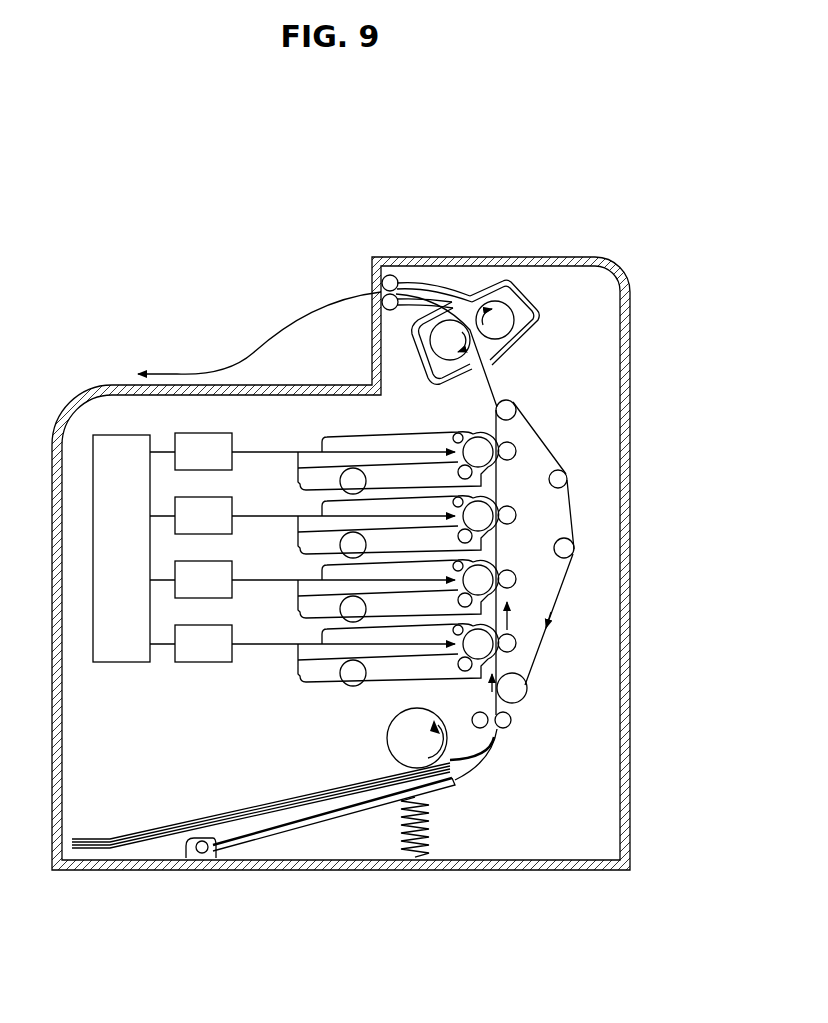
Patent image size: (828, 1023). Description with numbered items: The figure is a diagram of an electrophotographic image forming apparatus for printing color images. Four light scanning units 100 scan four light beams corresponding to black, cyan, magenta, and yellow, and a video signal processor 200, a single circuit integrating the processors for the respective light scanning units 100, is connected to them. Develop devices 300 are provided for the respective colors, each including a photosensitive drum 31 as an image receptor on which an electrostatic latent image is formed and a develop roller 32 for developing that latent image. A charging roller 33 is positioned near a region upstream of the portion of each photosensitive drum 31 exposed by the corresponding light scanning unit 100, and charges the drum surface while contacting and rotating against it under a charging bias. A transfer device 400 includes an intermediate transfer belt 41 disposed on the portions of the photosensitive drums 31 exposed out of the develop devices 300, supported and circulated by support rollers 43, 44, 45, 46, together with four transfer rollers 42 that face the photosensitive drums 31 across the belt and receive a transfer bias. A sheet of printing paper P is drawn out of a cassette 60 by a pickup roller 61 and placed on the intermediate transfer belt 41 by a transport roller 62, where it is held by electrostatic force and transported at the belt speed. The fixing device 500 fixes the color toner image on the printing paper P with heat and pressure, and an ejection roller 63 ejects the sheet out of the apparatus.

The ejection roller 63 is at (392, 278).
The fixing device 500 is at (558, 322).
The video signal processor 200 is at (122, 663).
The light scanning unit 100 is at (205, 663).
The develop device 300 is at (398, 518).
The photosensitive drum 31 is at (477, 448).
The develop roller 32 is at (459, 465).
The charging roller 33 is at (456, 434).
The transfer device 400 is at (591, 541).
The intermediate transfer belt 41 is at (550, 447).
The transfer roller 42 is at (534, 547).
The support roller 43 is at (527, 690).
The support roller 44 is at (517, 412).
The support roller 45 is at (574, 548).
The support roller 46 is at (566, 479).
The transport roller 62 is at (478, 719).
The pickup roller 61 is at (420, 738).
The cassette 60 is at (263, 807).
The printing paper P is at (278, 803).